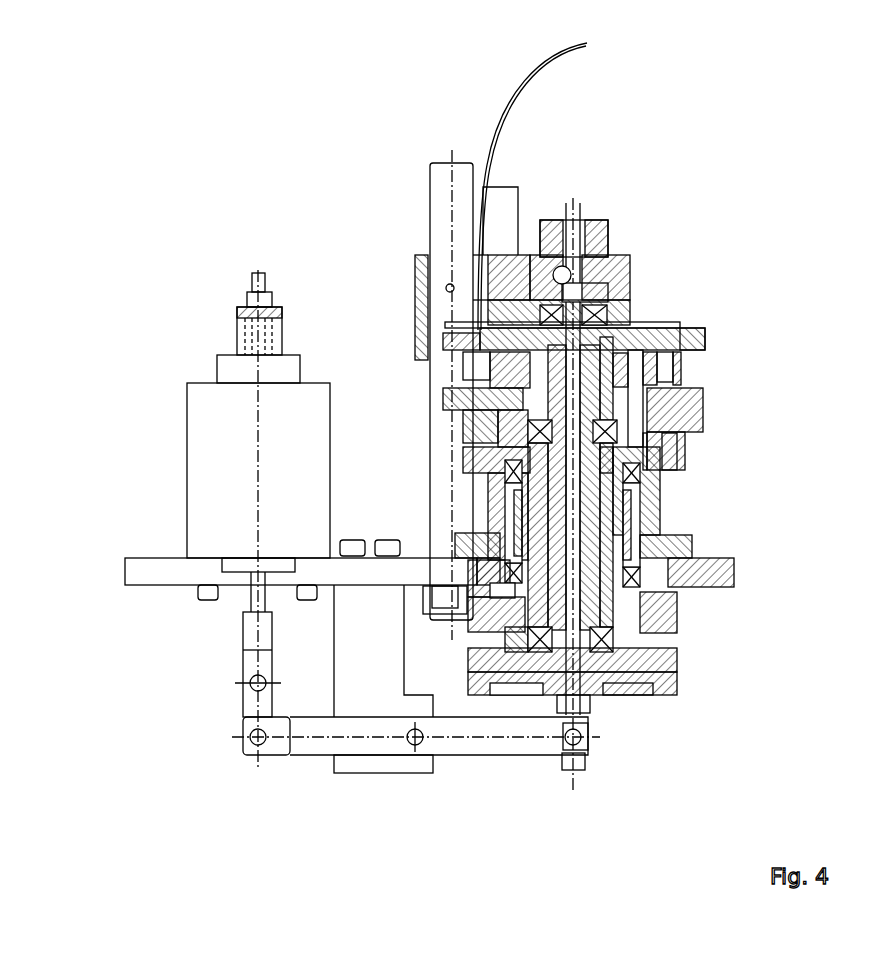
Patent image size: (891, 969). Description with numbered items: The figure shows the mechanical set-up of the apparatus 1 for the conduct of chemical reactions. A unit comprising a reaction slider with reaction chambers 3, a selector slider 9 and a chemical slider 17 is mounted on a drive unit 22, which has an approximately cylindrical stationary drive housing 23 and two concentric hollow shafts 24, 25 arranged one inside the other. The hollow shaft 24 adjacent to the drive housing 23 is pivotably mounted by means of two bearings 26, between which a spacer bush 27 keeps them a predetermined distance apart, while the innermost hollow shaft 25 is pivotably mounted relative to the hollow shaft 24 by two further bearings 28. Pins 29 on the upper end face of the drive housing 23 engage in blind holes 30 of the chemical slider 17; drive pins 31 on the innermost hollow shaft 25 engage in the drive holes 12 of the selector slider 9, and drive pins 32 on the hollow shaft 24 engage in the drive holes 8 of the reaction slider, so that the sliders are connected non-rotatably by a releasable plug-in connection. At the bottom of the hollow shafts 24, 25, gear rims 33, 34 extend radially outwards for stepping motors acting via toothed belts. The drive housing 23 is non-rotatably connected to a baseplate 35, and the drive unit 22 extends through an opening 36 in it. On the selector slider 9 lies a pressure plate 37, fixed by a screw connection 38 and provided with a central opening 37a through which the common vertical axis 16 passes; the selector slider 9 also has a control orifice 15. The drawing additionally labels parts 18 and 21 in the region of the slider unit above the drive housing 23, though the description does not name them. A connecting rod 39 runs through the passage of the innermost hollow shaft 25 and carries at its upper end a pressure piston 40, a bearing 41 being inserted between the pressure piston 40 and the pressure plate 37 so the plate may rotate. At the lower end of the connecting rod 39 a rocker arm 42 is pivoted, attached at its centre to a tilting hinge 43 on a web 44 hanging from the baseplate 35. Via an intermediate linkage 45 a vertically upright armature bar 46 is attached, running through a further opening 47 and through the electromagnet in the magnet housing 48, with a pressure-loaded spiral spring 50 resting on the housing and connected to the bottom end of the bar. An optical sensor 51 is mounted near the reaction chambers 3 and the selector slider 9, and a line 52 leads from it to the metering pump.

The apparatus 1 is at (745, 102).
The reaction chambers 3 is at (477, 367).
The drive holes 8 is at (681, 330).
The selector slider 9 is at (680, 375).
The drive holes 12 is at (650, 320).
The control orifice 15 is at (470, 340).
The axis 16 is at (585, 235).
The chemical slider 17 is at (703, 418).
The cover 18 is at (455, 395).
The sleeve 21 is at (462, 416).
The drive unit 22 is at (765, 503).
The drive housing 23 is at (652, 507).
The hollow shaft 24 is at (667, 537).
The innermost hollow shaft 25 is at (555, 512).
The bearings 26 is at (690, 470).
The spacer bush 27 is at (515, 530).
The further bearings 28 is at (530, 440).
The pins 29 is at (690, 448).
The blind holes 30 is at (703, 430).
The drive pins 31 is at (705, 345).
The drive pins 32 is at (682, 418).
The gear rim 33 is at (680, 653).
The gear rim 34 is at (678, 693).
The baseplate 35 is at (147, 570).
The opening 36 is at (680, 593).
The pressure plate 37 is at (680, 335).
The central opening 37a is at (428, 270).
The screw connection 38 is at (473, 327).
The connecting rod 39 is at (520, 292).
The pressure piston 40 is at (605, 255).
The bearing 41 is at (627, 290).
The rocker arm 42 is at (346, 748).
The tilting hinge 43 is at (420, 740).
The web 44 is at (350, 678).
The intermediate linkage 45 is at (247, 710).
The armature bar 46 is at (257, 327).
The further opening 47 is at (242, 580).
The magnet housing 48 is at (215, 485).
The spiral spring 50 is at (243, 347).
The optical sensor 51 is at (507, 197).
The line 52 is at (533, 73).